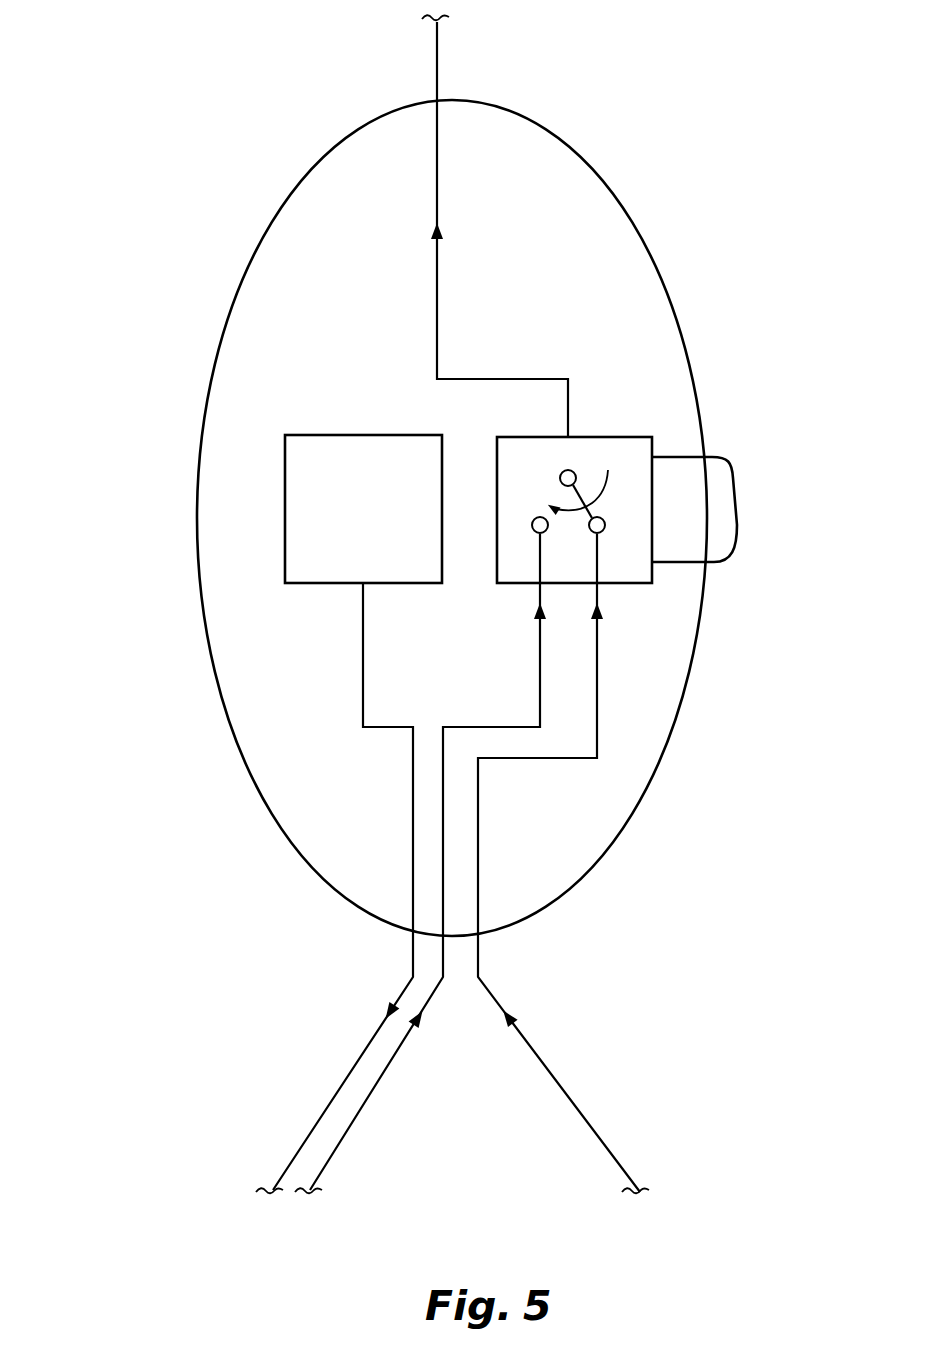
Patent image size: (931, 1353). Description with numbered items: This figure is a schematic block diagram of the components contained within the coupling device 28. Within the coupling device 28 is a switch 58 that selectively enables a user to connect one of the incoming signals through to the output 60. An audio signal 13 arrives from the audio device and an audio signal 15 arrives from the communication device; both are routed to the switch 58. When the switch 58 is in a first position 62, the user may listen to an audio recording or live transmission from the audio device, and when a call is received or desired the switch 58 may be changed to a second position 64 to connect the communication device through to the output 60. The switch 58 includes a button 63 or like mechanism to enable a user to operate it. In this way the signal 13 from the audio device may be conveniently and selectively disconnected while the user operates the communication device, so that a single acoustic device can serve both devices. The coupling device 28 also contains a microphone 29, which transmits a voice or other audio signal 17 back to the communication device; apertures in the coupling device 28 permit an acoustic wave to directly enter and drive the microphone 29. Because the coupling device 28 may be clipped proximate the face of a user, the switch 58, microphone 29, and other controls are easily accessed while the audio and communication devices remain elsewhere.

The coupling device 28 is at (172, 86).
The microphone 29 is at (350, 536).
The output 60 is at (438, 300).
The switch 58 is at (627, 440).
The first position 62 is at (592, 481).
The second position 64 is at (561, 489).
The button 63 is at (712, 490).
The voice signal 17 is at (350, 1067).
The audio signal 15 is at (360, 1110).
The audio signal 13 is at (580, 1113).